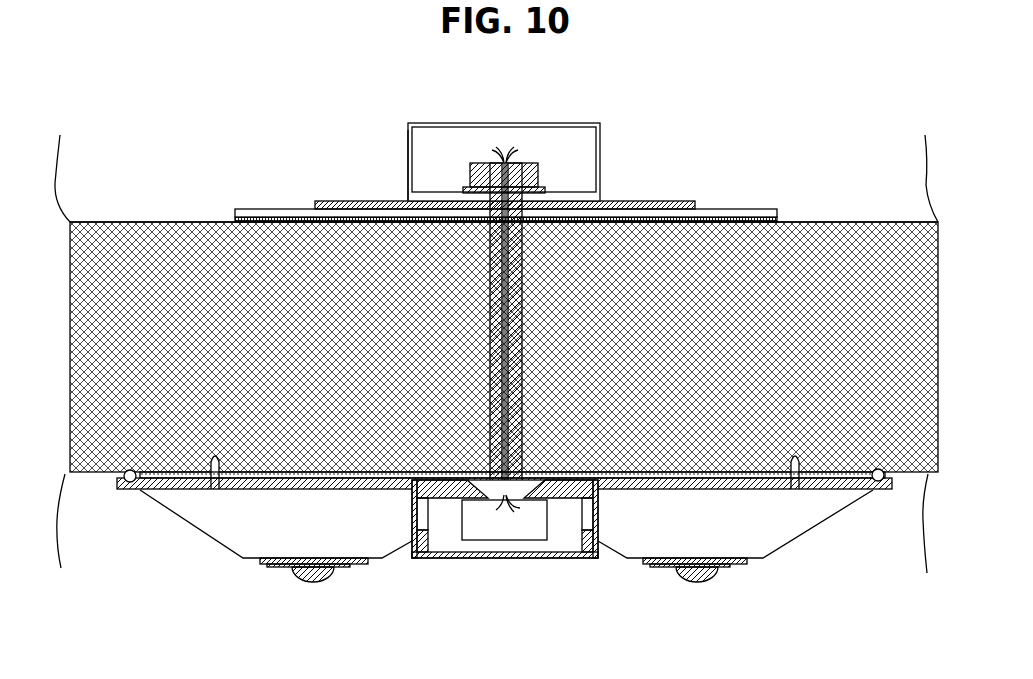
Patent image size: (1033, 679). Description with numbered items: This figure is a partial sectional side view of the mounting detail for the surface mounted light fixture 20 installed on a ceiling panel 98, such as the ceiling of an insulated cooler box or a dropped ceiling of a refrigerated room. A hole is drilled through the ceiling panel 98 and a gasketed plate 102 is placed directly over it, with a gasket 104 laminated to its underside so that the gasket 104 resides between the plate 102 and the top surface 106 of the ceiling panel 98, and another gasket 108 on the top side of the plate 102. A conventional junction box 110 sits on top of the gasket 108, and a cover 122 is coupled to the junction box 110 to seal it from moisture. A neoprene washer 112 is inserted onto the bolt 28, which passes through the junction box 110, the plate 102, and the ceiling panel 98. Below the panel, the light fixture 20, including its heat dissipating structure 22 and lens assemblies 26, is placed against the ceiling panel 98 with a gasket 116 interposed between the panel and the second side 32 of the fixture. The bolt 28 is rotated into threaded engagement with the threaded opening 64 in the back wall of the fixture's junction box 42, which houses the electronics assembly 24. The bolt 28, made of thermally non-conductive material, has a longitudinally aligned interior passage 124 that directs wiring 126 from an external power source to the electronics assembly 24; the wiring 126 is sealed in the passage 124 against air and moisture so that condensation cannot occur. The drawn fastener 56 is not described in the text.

The ceiling panel 98 is at (82, 253).
The top surface 106 is at (140, 222).
The gasket 108 is at (688, 200).
The gasketed plate 102 is at (777, 211).
The gasket 104 is at (778, 219).
The junction box 110 is at (408, 143).
The cover 122 is at (432, 123).
The neoprene washer 112 is at (540, 189).
The wiring 126 is at (505, 150).
The bolt 28 is at (523, 280).
The interior passage 124 is at (508, 333).
The second side 32 is at (805, 488).
The fastener 56 is at (118, 482).
The gasket 116 is at (858, 478).
The junction box 42 is at (600, 507).
The electronics assembly 24 is at (527, 540).
The threaded opening 64 is at (489, 512).
The surface mounted light fixture 20 is at (272, 561).
The heat dissipating structure 22 is at (222, 537).
The lens assemblies 26 is at (312, 598).